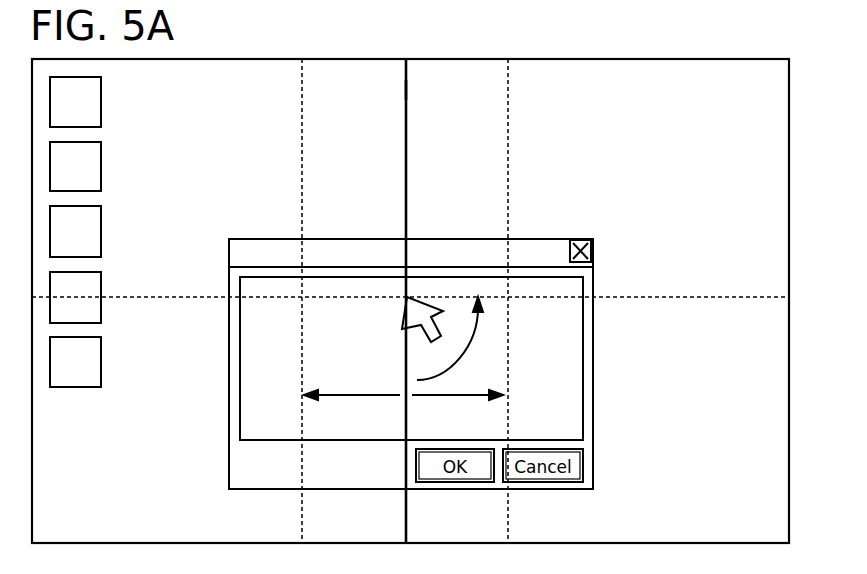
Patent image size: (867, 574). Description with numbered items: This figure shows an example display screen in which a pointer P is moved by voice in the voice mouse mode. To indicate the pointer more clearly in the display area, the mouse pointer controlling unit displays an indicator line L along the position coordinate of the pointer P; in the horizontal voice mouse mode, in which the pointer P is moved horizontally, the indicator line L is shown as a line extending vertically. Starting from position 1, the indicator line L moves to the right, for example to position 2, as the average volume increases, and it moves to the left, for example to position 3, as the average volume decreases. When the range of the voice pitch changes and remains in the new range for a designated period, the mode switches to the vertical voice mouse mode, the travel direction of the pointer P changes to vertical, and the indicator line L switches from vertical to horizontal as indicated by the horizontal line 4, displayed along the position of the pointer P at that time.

The position 1 is at (406, 289).
The position 2 is at (508, 288).
The position 3 is at (302, 288).
The switched indicator line 4 is at (425, 298).
The indicator line L is at (409, 93).
The pointer P is at (417, 327).